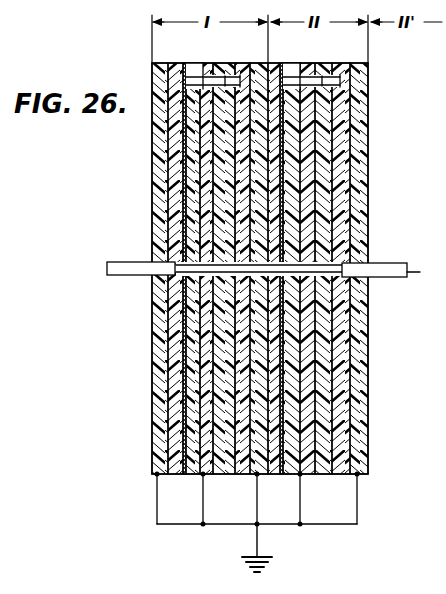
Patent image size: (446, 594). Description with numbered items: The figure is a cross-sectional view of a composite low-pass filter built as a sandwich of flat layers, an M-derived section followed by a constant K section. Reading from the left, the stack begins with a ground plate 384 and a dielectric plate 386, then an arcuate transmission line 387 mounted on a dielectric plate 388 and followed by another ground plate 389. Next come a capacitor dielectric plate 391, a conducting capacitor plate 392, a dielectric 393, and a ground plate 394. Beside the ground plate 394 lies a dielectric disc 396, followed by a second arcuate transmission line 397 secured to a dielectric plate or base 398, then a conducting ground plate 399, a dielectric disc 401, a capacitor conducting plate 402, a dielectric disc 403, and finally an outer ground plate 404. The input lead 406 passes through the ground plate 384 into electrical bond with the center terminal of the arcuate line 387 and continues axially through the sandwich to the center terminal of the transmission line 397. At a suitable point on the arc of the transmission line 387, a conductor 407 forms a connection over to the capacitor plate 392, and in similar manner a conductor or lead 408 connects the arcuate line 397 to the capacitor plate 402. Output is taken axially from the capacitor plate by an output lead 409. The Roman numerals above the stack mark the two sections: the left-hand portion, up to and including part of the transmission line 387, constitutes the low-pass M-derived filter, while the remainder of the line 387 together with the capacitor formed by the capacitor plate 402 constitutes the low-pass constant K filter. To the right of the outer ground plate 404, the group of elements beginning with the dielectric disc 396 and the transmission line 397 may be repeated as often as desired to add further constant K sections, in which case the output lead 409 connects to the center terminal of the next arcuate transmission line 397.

The ground plate 384 is at (153, 147).
The dielectric plate 386 is at (160, 182).
The arcuate transmission line 387 is at (182, 462).
The dielectric plate 388 is at (192, 337).
The ground plate 389 is at (207, 70).
The capacitor dielectric plate 391 is at (217, 353).
The conducting capacitor plate 392 is at (233, 73).
The dielectric 393 is at (243, 400).
The ground plate 394 is at (238, 462).
The dielectric disc 396 is at (272, 70).
The arcuate transmission line 397 is at (268, 460).
The dielectric plate 398 is at (288, 323).
The conducting ground plate 399 is at (303, 457).
The dielectric disc 401 is at (312, 352).
The capacitor conducting plate 402 is at (328, 377).
The dielectric disc 403 is at (343, 407).
The outer ground plate 404 is at (363, 452).
The input lead 406 is at (107, 267).
The conductor 407 is at (192, 82).
The conductor or lead 408 is at (320, 72).
The output lead 409 is at (418, 272).